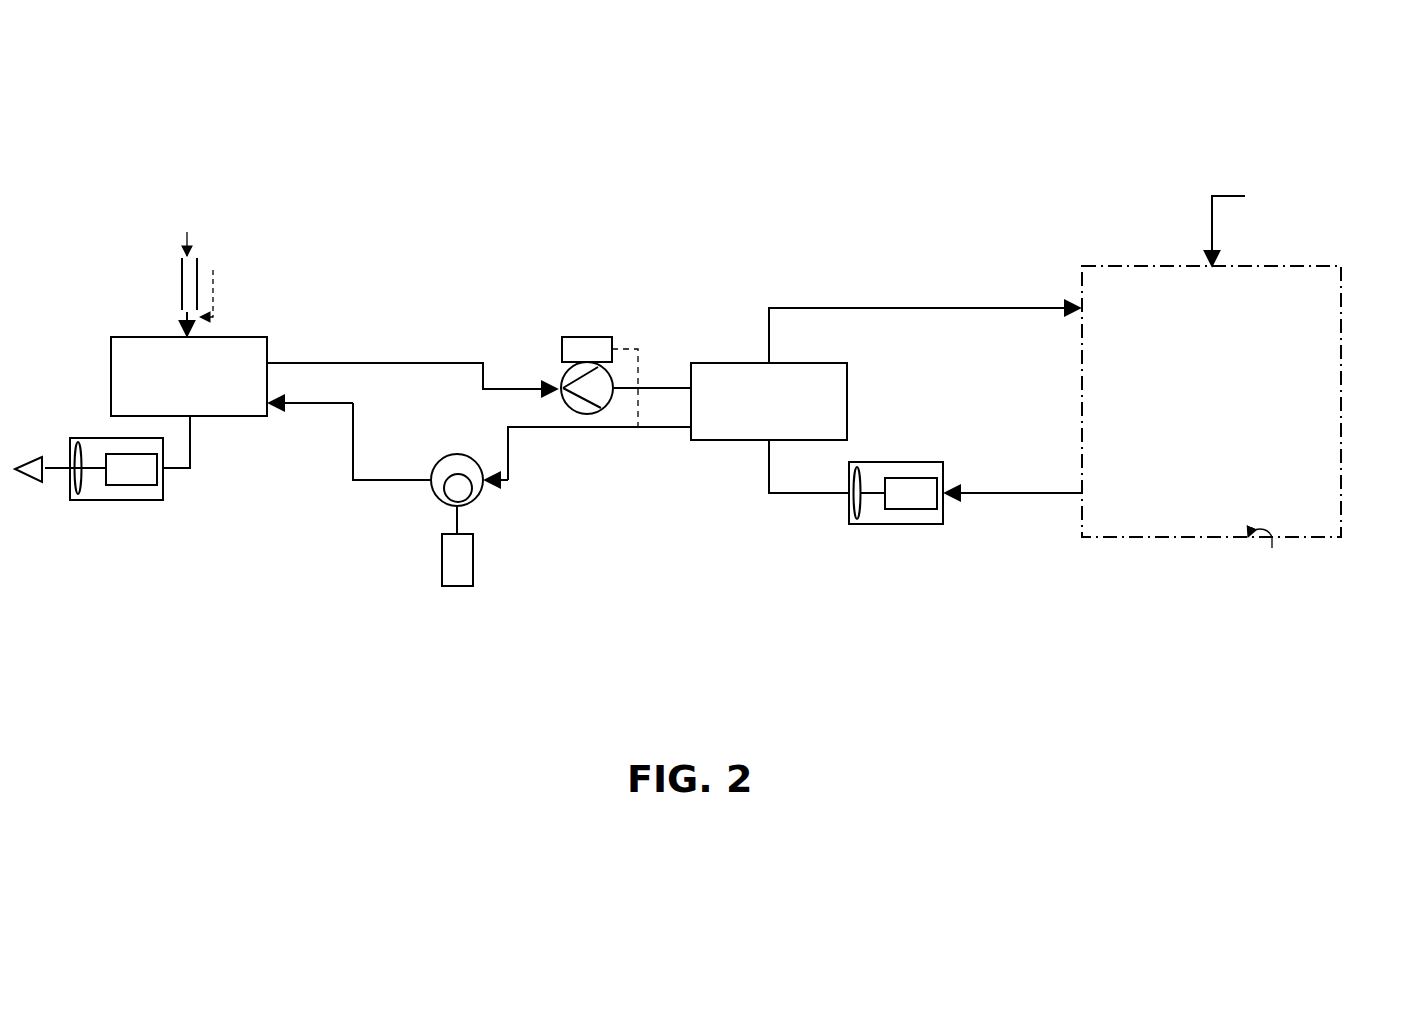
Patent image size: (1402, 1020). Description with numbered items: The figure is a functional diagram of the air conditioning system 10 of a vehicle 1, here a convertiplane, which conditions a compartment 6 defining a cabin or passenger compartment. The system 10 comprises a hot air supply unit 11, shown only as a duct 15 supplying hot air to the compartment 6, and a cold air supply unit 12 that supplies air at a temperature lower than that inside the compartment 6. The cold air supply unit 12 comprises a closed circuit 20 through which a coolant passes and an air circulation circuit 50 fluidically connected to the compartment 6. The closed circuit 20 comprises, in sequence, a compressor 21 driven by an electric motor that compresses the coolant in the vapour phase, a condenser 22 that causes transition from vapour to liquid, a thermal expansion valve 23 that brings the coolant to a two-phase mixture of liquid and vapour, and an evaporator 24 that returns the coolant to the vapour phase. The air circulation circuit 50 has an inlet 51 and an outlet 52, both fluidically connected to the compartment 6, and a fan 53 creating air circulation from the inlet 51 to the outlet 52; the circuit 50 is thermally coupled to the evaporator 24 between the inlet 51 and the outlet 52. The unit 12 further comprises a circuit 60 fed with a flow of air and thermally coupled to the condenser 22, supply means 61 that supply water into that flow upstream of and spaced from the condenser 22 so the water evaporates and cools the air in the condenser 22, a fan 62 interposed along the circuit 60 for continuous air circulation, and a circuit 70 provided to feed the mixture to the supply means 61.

The vehicle 1 is at (1359, 282).
The compartment 6 is at (1270, 550).
The air conditioning system 10 is at (1078, 178).
The hot air supply unit 11 is at (1301, 203).
The cold air supply unit 12 is at (529, 285).
The duct 15 is at (1228, 192).
The closed circuit 20 is at (289, 450).
The compressor 21 is at (480, 488).
The condenser 22 is at (122, 380).
The thermal expansion valve 23 is at (585, 345).
The evaporator 24 is at (838, 388).
The air circulation circuit 50 is at (1022, 506).
The inlet 51 is at (1082, 490).
The outlet 52 is at (1081, 305).
The fan 53 is at (905, 524).
The circuit 60 is at (176, 258).
The supply means 61 is at (202, 322).
The fan 62 is at (120, 492).
The circuit 70 is at (216, 285).